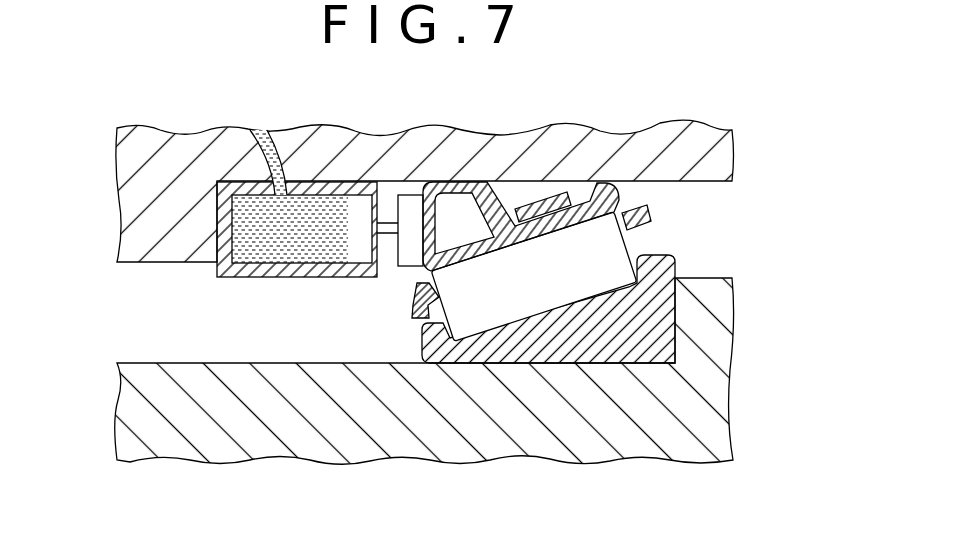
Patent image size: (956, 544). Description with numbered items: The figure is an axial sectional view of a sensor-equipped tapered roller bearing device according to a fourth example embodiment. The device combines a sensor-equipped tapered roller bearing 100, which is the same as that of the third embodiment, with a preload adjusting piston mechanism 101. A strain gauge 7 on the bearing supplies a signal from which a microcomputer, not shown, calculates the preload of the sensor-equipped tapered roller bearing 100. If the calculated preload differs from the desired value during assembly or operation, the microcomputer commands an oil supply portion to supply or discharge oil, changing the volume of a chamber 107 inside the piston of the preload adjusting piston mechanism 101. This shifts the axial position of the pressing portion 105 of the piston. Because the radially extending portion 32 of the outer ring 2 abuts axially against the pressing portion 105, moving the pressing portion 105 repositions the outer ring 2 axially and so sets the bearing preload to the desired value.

The outer ring 2 is at (496, 224).
The strain gauge 7 is at (543, 198).
The radially extending portion 32 is at (437, 211).
The sensor-equipped tapered roller bearing 100 is at (649, 239).
The preload adjusting piston mechanism 101 is at (292, 288).
The pressing portion 105 is at (411, 262).
The chamber 107 is at (268, 256).